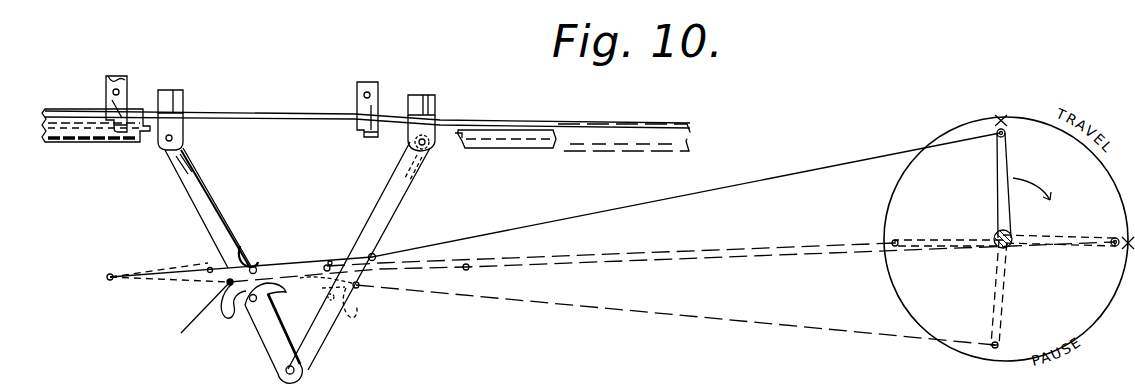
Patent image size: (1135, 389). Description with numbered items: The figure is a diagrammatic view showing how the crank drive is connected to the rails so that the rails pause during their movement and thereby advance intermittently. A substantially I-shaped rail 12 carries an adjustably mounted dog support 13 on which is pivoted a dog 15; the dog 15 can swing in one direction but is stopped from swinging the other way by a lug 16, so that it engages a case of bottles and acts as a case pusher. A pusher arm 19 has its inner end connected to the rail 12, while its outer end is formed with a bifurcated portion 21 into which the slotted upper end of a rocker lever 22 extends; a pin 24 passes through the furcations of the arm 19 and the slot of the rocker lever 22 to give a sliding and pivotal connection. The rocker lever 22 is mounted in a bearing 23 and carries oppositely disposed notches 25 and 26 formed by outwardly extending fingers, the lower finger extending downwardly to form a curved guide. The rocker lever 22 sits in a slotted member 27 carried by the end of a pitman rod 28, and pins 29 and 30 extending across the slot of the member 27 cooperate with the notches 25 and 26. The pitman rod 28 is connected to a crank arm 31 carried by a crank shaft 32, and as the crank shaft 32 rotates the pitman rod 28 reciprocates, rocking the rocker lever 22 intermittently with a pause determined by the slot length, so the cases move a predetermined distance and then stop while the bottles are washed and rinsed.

The rail 12 is at (493, 135).
The dog support 13 is at (126, 82).
The dog 15 is at (120, 131).
The lug 16 is at (116, 80).
The pusher arm 19 is at (212, 113).
The bifurcated portion 21 is at (185, 105).
The rocker lever 22 is at (210, 208).
The bearing 23 is at (305, 371).
The pin 24 is at (186, 145).
The notch 25 is at (226, 284).
The notch 26 is at (260, 268).
The slotted member 27 is at (329, 262).
The pitman rod 28 is at (565, 220).
The pin 29 is at (208, 268).
The pin 30 is at (255, 265).
The crank arm 31 is at (1012, 158).
The crank shaft 32 is at (997, 233).